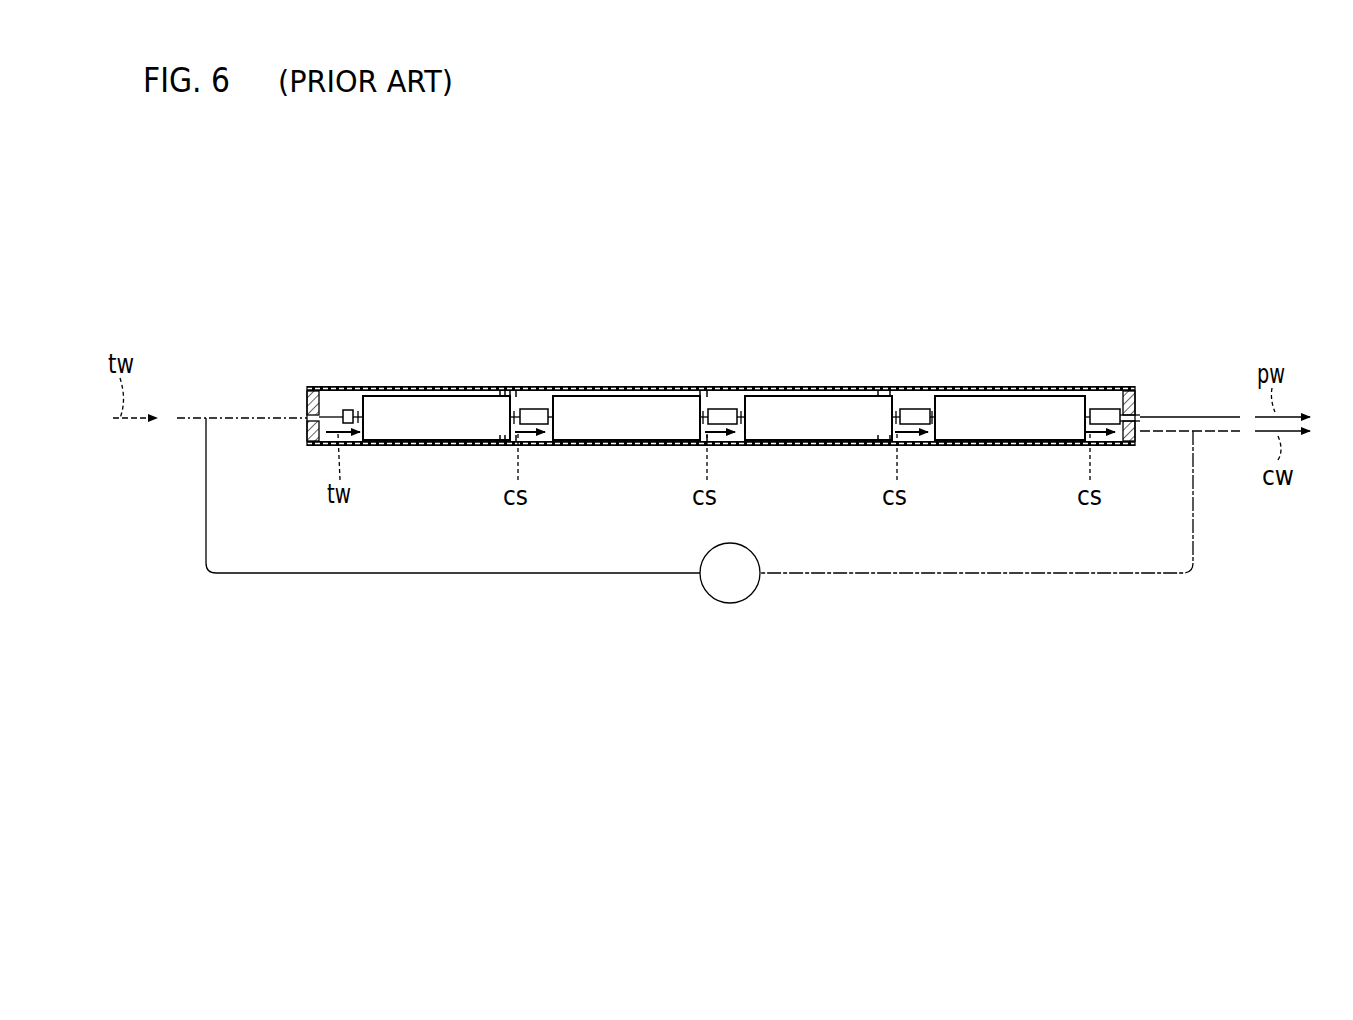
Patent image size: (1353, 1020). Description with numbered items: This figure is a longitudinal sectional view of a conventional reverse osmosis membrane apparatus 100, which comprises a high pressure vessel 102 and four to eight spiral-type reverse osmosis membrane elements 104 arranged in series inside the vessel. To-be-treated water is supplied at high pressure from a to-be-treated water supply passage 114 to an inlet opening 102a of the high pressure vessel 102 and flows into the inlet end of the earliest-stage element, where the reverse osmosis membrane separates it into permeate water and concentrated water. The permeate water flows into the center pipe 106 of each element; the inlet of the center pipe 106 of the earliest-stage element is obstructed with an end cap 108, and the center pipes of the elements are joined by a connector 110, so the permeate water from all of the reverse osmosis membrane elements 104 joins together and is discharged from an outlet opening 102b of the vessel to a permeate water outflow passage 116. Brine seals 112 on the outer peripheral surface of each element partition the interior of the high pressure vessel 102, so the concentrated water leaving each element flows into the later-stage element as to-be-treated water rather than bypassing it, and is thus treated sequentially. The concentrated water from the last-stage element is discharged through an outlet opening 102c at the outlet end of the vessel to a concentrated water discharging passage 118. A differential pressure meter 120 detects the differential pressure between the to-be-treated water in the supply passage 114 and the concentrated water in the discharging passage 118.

The reverse osmosis membrane apparatus 100 is at (858, 357).
The high pressure vessel 102 is at (793, 386).
The inlet opening 102a is at (306, 424).
The outlet opening 102b is at (1132, 390).
The outlet opening 102c is at (1145, 448).
The reverse osmosis membrane element 104 is at (420, 418).
The center pipe 106 is at (520, 386).
The end cap 108 is at (350, 408).
The connector 110 is at (722, 408).
The brine seal 112 is at (500, 386).
The to-be-treated water supply passage 114 is at (245, 418).
The permeate water outflow passage 116 is at (1213, 412).
The concentrated water discharging passage 118 is at (1215, 436).
The differential pressure meter 120 is at (720, 604).